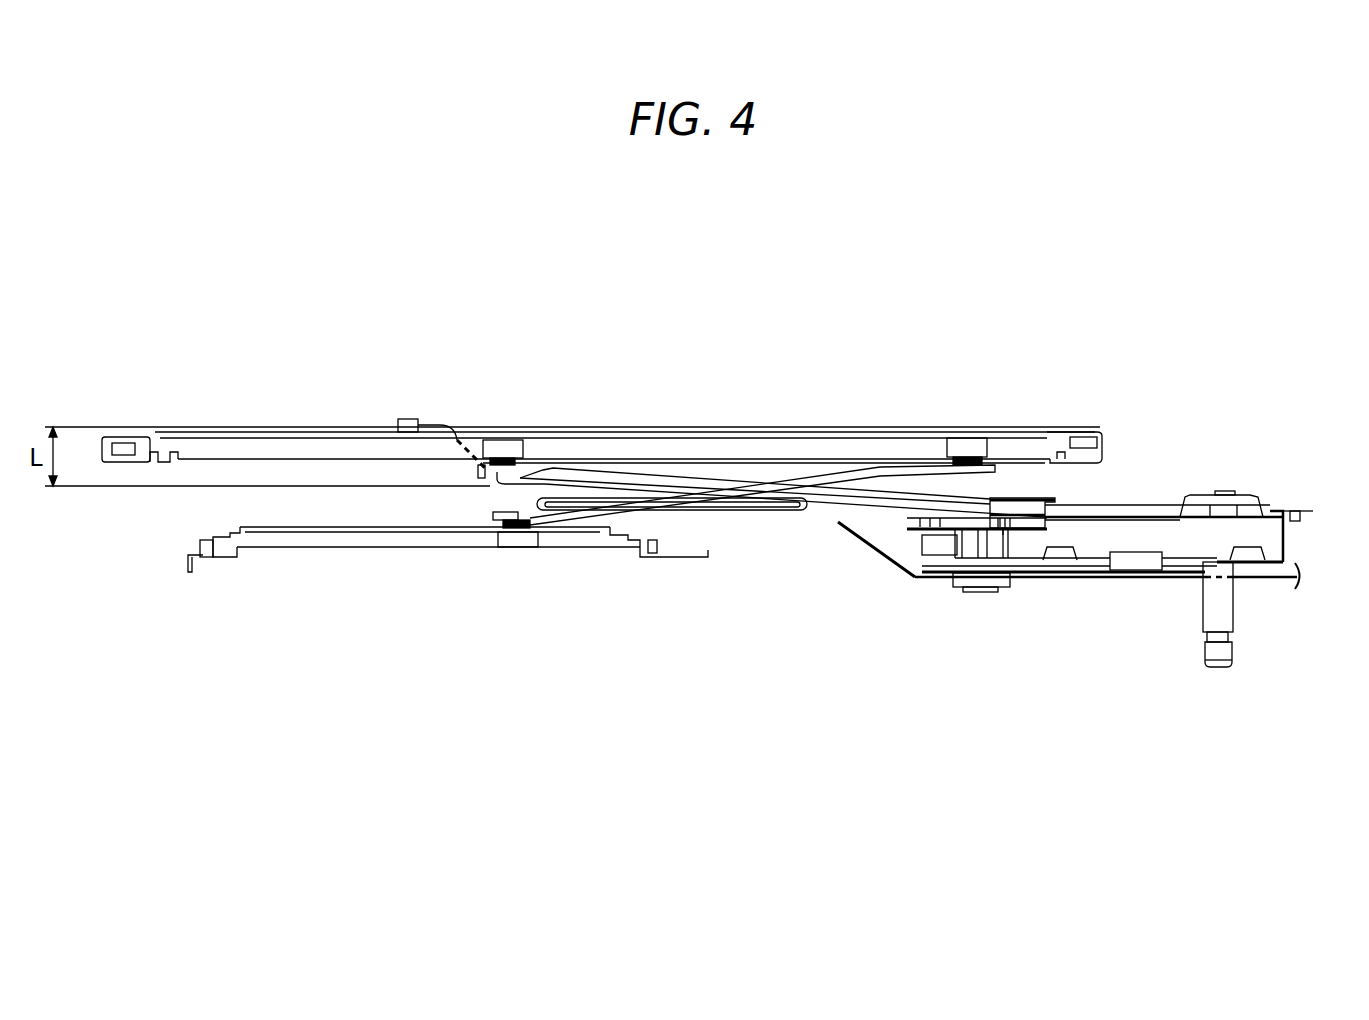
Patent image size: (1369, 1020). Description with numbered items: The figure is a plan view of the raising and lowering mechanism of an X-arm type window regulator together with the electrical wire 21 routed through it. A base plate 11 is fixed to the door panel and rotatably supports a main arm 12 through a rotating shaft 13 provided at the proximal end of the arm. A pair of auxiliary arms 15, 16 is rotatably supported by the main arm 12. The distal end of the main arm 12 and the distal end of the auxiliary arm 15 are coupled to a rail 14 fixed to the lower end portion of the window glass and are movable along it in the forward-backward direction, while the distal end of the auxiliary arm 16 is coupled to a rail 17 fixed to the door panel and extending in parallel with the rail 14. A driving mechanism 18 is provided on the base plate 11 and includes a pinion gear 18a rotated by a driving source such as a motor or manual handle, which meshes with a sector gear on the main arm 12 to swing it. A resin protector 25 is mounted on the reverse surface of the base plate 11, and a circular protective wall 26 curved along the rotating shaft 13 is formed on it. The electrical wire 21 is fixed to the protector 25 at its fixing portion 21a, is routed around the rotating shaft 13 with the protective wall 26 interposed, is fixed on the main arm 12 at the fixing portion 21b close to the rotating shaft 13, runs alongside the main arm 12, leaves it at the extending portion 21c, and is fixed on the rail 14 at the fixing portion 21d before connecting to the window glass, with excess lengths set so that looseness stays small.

The base plate 11 is at (1190, 578).
The main arm 12 is at (615, 462).
The rotating shaft 13 is at (982, 592).
The rail 14 is at (773, 427).
The auxiliary arm 15 is at (860, 458).
The auxiliary arm 16 is at (768, 516).
The rail 17 is at (330, 540).
The driving mechanism 18 is at (1241, 622).
The pinion gear 18a is at (1228, 505).
The electrical wire 21 is at (1283, 580).
The fixing portion 21a is at (958, 588).
The fixing portion 21b is at (838, 522).
The extending portion 21c is at (550, 483).
The fixing portion 21d is at (402, 418).
The protector 25 is at (1132, 552).
The protective wall 26 is at (1010, 588).